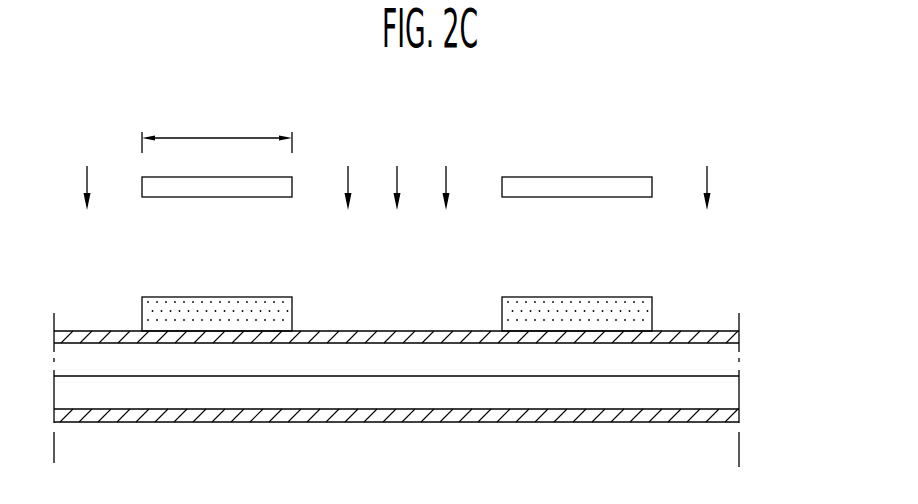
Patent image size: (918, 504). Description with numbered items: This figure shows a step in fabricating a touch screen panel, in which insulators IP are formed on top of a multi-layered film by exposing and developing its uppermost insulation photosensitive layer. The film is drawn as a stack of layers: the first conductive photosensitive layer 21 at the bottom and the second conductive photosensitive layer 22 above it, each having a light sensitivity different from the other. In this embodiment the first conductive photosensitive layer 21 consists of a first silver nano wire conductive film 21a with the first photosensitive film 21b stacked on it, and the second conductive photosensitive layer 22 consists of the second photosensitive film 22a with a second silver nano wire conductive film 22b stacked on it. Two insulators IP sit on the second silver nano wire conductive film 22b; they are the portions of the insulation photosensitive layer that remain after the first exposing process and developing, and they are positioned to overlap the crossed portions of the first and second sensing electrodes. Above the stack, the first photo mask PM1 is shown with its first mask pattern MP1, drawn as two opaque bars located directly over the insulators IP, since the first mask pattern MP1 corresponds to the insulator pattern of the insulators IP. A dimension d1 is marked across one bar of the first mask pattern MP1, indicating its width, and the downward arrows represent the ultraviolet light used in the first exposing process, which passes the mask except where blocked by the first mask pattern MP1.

The width of first metal pattern d1 is at (217, 133).
The first mask pattern MP1 is at (292, 187).
The first photo mask PM1 is at (590, 162).
The insulators IP is at (292, 312).
The second silver nano wire conductive film 22b is at (740, 338).
The second photosensitive film 22a is at (738, 360).
The first photosensitive film 21b is at (738, 386).
The first silver nano wire conductive film 21a is at (738, 413).
The second conductive photosensitive layer 22 is at (804, 327).
The first conductive photosensitive layer 21 is at (804, 378).